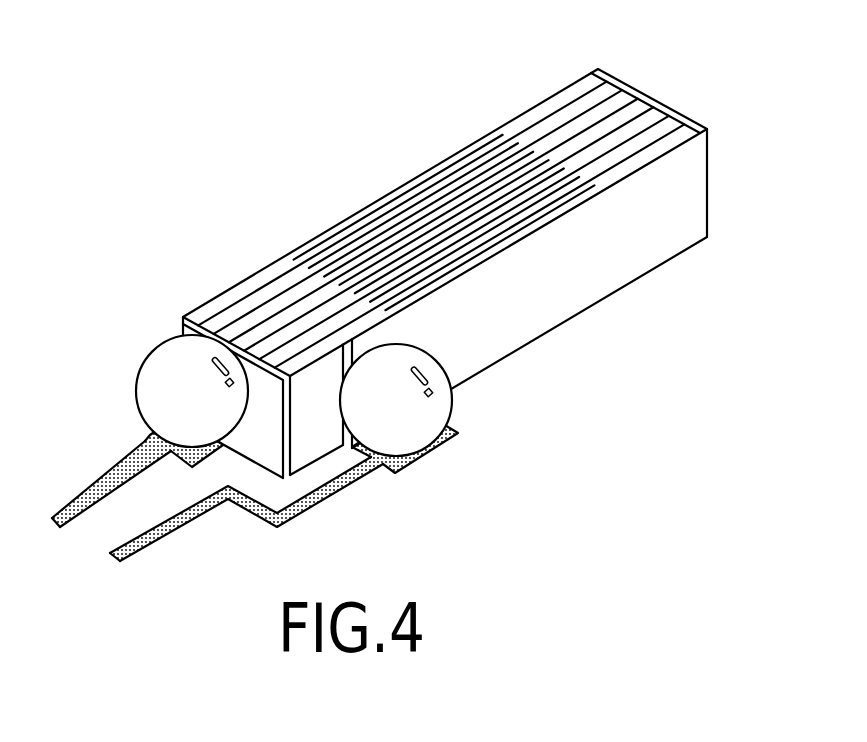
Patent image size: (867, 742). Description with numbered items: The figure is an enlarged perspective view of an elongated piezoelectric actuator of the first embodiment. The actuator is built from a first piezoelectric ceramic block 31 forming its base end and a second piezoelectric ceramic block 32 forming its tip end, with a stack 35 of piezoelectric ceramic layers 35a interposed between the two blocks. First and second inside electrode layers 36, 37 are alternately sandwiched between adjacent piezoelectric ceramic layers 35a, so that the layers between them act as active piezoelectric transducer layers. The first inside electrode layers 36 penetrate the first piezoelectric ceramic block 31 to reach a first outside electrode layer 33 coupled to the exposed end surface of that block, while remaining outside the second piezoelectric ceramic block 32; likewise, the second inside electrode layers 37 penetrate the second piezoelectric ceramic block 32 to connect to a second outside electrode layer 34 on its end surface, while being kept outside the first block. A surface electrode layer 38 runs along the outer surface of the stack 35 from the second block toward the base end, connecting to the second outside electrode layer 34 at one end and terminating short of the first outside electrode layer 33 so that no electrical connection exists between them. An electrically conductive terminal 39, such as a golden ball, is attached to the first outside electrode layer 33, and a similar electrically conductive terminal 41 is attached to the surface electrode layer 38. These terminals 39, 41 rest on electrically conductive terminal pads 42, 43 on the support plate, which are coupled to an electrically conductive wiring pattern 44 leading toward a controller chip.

The first piezoelectric ceramic block 31 is at (278, 252).
The second piezoelectric ceramic block 32 is at (573, 73).
The first outside electrode layer 33 is at (295, 472).
The second outside electrode layer 34 is at (628, 108).
The stack 35 is at (487, 130).
The piezoelectric ceramic layer 35a is at (497, 142).
The first inside electrode layer 36 is at (283, 270).
The second inside electrode layer 37 is at (450, 165).
The surface electrode layer 38 is at (543, 331).
The electrically conductive terminal 39 is at (158, 347).
The electrically conductive terminal 41 is at (452, 400).
The electrically conductive terminal pad 42 is at (146, 438).
The electrically conductive terminal pad 43 is at (422, 452).
The electrically conductive wiring pattern 44 is at (115, 494).